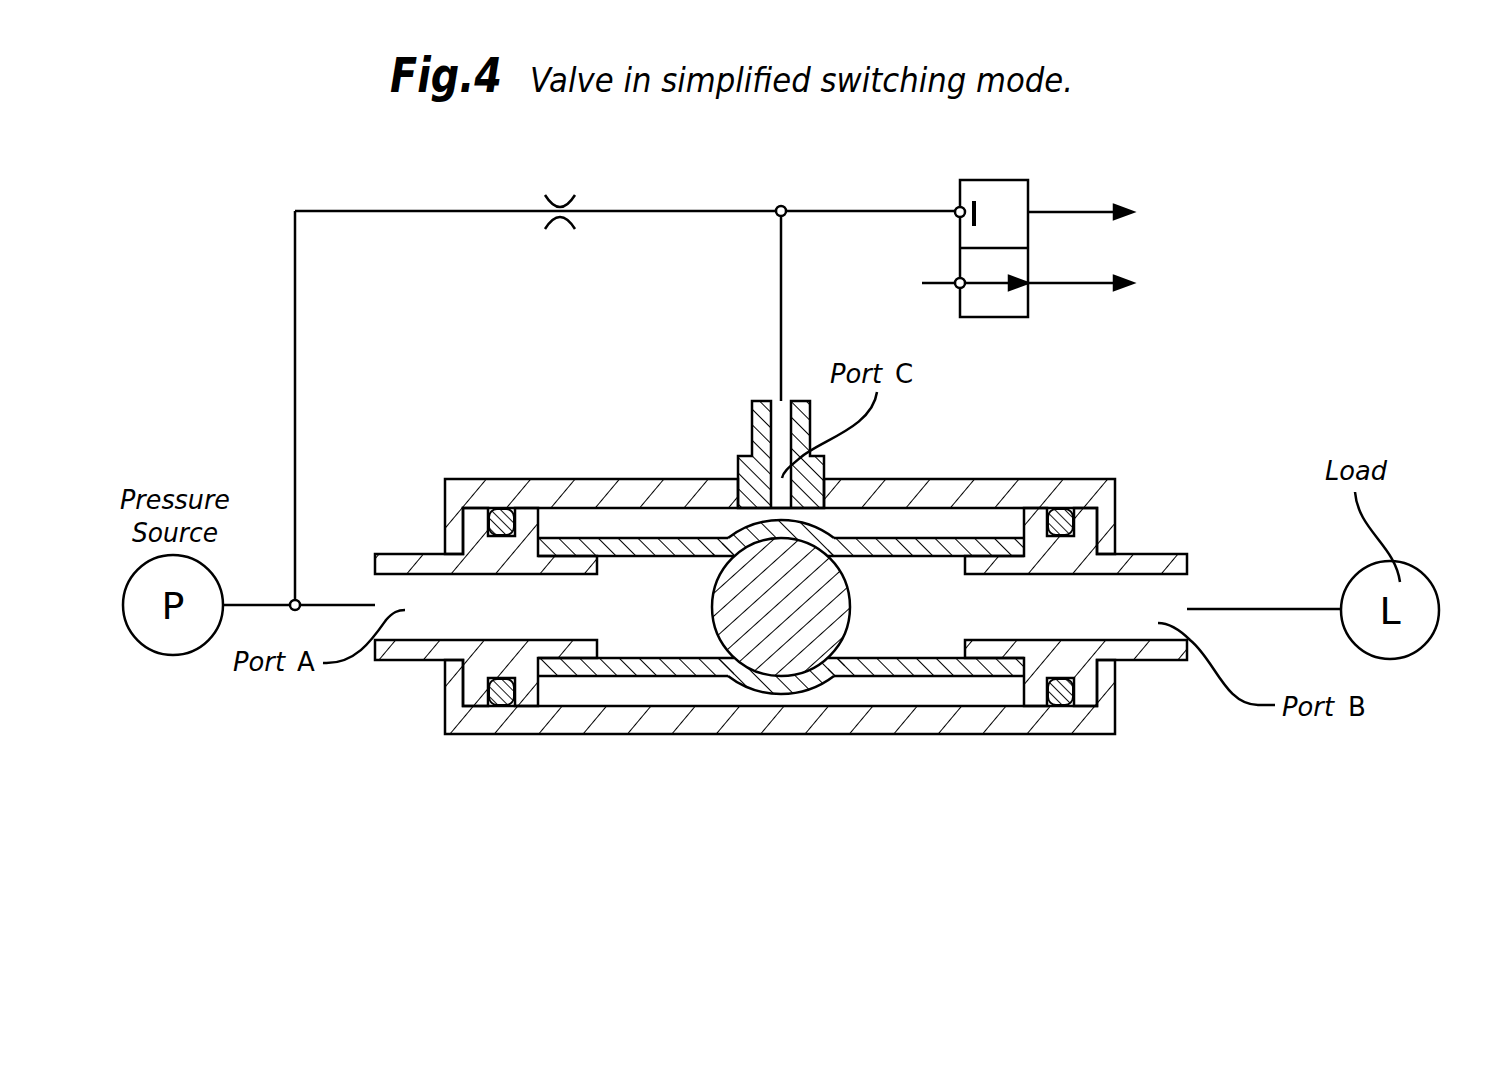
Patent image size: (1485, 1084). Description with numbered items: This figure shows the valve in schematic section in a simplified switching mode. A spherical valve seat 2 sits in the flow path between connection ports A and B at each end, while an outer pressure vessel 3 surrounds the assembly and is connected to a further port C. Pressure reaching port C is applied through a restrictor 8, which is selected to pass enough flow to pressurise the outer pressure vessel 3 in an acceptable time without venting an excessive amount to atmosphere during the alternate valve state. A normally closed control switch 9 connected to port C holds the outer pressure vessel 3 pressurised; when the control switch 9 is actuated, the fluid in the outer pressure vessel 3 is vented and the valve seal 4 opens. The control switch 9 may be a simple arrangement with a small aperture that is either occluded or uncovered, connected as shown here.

The spherical valve seat 2 is at (792, 615).
The outer pressure vessel 3 is at (937, 487).
The valve seal 4 is at (712, 566).
The restrictor 8 is at (547, 209).
The control switch 9 is at (1007, 202).